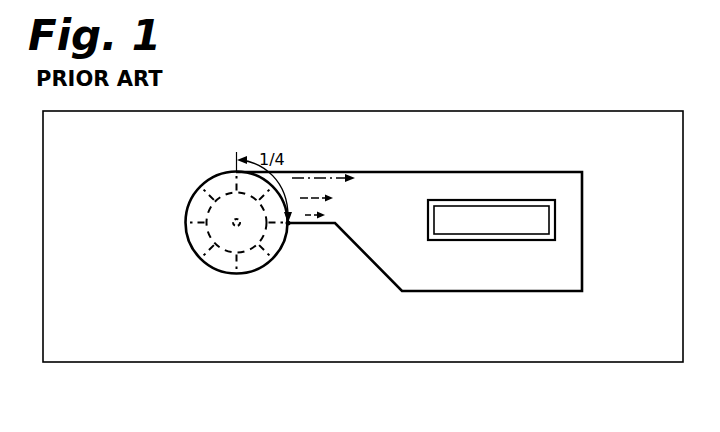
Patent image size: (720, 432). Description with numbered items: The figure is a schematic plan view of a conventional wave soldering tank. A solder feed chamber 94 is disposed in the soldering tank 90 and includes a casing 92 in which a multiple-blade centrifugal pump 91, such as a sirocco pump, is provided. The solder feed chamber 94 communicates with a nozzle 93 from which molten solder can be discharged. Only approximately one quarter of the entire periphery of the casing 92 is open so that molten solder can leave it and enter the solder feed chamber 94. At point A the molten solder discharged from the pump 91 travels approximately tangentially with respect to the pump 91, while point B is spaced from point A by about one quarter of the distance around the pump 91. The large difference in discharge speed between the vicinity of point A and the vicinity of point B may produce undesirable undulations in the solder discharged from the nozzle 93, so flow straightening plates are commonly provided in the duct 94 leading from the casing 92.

The soldering tank 90 is at (353, 362).
The multiple-blade centrifugal pump 91 is at (193, 247).
The casing 92 is at (247, 272).
The nozzle 93 is at (470, 200).
The solder feed chamber 94 is at (374, 262).
The point A is at (235, 172).
The point B is at (289, 225).